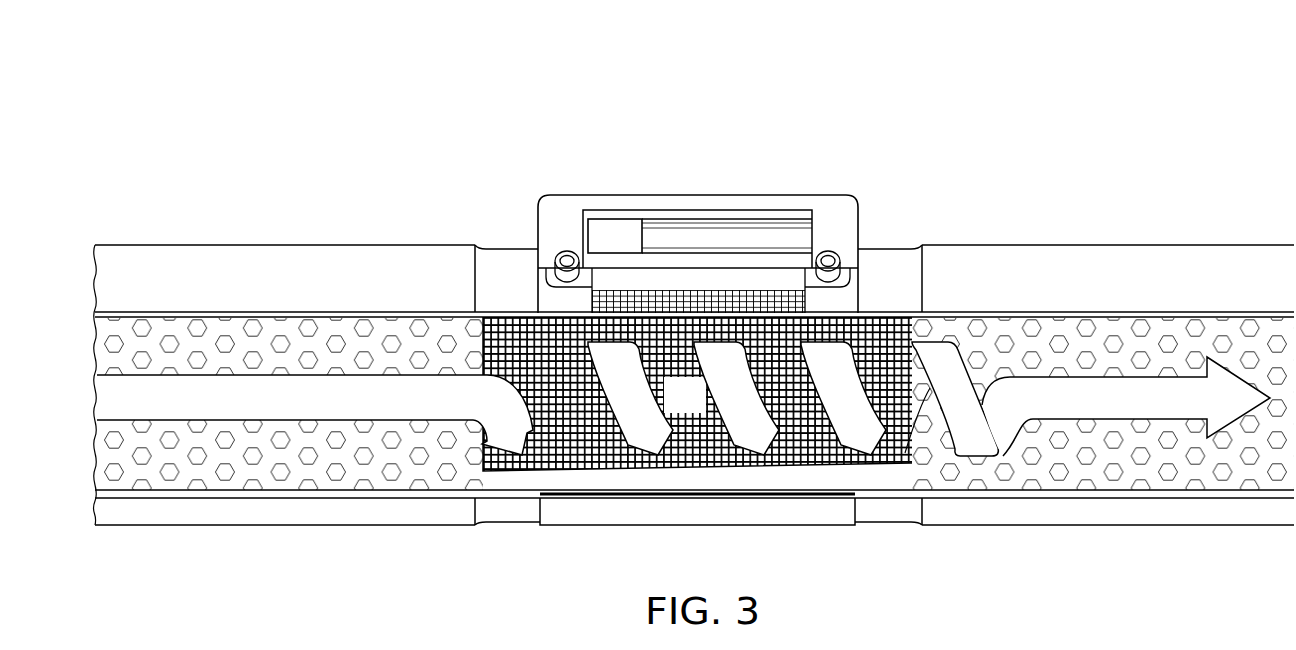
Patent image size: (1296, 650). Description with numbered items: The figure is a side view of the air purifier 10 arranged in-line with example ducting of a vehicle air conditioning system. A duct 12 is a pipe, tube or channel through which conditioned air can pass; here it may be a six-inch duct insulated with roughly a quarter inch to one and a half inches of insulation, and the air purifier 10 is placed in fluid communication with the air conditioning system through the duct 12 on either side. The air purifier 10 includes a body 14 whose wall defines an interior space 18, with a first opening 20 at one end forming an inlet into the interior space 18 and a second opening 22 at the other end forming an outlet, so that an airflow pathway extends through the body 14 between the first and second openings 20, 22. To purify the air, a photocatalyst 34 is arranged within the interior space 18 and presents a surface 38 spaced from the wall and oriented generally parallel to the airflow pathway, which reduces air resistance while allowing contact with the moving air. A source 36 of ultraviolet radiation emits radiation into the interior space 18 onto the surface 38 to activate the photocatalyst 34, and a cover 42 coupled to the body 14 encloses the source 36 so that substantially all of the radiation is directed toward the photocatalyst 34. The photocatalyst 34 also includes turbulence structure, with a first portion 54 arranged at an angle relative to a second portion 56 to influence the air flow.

The air purifier 10 is at (678, 133).
The duct 12 is at (260, 257).
The body 14 is at (505, 257).
The interior space 18 is at (681, 477).
The first opening 20 is at (487, 478).
The second opening 22 is at (905, 480).
The photocatalyst 34 is at (713, 458).
The source of ultraviolet radiation 36 is at (747, 236).
The surface 38 is at (703, 410).
The cover 42 is at (833, 208).
The first portion 54 is at (525, 477).
The second portion 56 is at (885, 470).